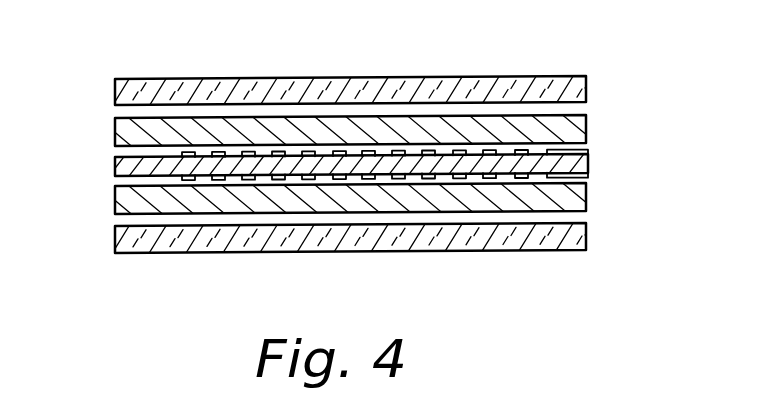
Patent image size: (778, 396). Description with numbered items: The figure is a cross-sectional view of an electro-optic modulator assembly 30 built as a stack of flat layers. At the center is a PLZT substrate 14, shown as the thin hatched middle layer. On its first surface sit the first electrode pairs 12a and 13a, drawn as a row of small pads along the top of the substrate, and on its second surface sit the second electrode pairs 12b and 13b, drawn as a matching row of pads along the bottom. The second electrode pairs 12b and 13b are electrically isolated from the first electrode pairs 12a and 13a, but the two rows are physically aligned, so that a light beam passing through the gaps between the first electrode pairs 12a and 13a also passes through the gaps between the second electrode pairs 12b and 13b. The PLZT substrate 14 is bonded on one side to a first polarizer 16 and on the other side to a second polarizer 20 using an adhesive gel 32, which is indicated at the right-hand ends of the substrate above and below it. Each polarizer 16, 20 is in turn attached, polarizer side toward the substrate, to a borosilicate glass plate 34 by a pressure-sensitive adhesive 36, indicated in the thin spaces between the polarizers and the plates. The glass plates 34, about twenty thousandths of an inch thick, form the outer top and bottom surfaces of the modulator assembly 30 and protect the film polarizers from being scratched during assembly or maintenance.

The electro-optic modulator assembly 30 is at (564, 46).
The borosilicate glass plates 34 is at (115, 92).
The pressure-sensitive adhesive 36 is at (110, 113).
The first polarizer 16 is at (589, 117).
The PLZT substrate 14 is at (588, 160).
The second polarizer 20 is at (588, 200).
The adhesive gel 32 is at (589, 143).
The first electrode pairs 12a is at (340, 150).
The first electrode pairs 13a is at (349, 150).
The second electrode pairs 12b is at (337, 179).
The second electrode pairs 13b is at (420, 179).